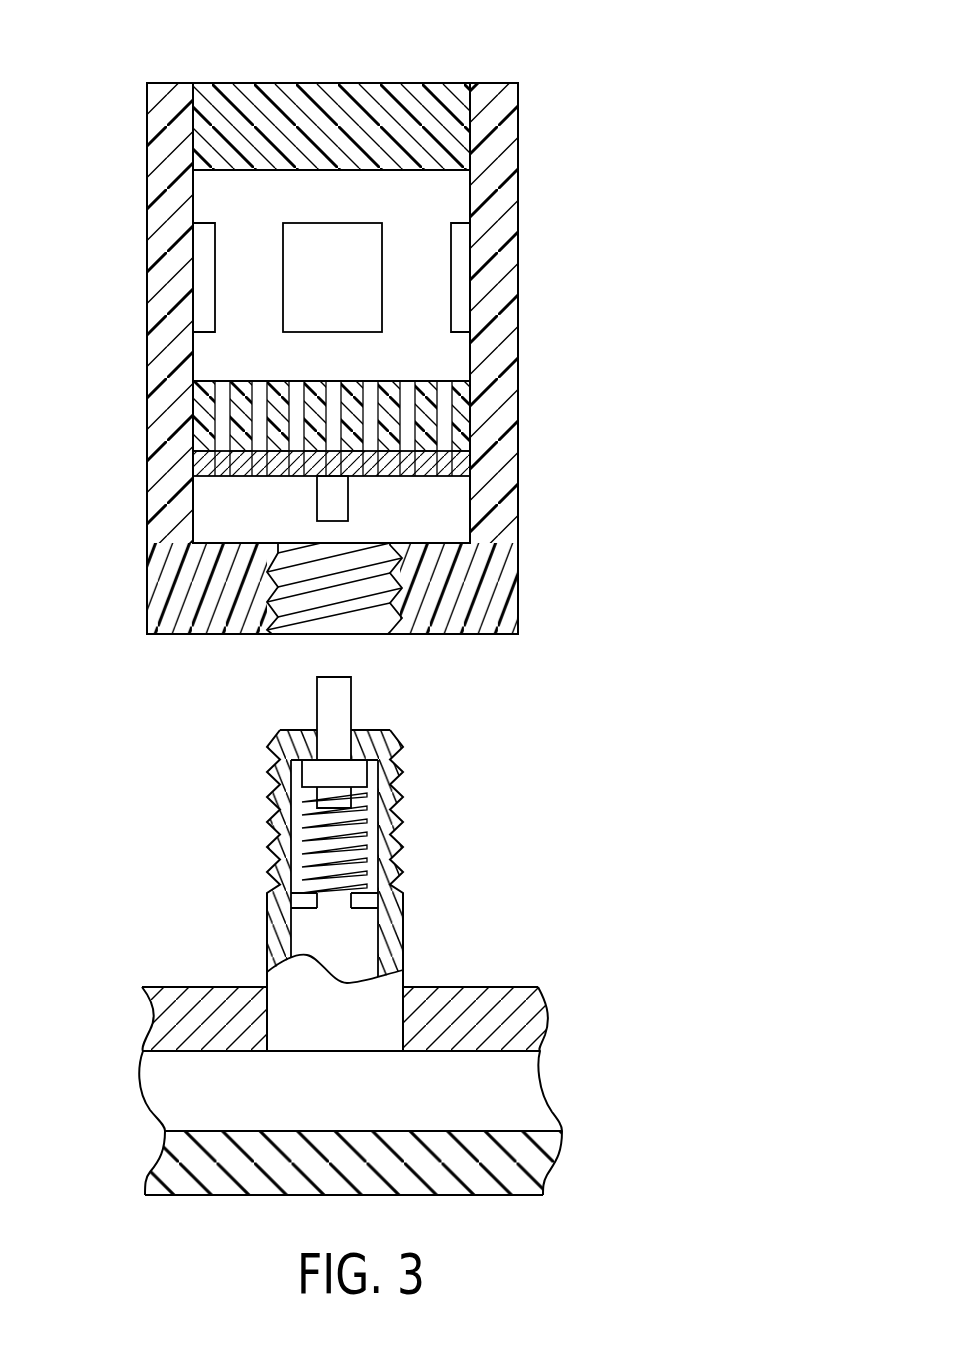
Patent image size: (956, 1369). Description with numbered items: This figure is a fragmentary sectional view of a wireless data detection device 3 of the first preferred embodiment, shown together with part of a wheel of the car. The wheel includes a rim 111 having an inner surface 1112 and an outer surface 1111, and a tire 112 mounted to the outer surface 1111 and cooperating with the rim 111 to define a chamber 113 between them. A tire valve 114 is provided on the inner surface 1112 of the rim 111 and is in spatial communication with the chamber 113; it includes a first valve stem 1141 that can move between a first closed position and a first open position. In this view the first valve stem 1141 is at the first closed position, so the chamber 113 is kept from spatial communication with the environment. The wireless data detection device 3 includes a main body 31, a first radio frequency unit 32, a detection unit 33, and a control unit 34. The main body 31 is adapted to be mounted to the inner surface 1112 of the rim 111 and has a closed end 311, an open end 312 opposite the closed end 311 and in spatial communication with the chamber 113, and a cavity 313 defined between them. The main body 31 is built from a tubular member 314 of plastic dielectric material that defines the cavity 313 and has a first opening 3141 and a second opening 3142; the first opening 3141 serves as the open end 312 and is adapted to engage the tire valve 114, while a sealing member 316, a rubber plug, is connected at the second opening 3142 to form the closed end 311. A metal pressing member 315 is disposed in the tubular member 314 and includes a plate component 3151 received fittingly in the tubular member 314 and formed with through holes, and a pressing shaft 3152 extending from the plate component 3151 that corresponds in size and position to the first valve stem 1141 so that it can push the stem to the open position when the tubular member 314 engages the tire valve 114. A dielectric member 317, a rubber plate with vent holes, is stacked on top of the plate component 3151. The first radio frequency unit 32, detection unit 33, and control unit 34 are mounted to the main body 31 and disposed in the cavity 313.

The wireless data detection device 3 is at (550, 106).
The main body 31 is at (518, 185).
The closed end 311 is at (167, 83).
The open end 312 is at (208, 634).
The cavity 313 is at (213, 350).
The tubular member 314 is at (148, 225).
The pressing member 315 is at (409, 390).
The sealing member 316 is at (240, 107).
The dielectric member 317 is at (245, 379).
The first radio frequency unit 32 is at (330, 222).
The detection unit 33 is at (202, 267).
The control unit 34 is at (465, 277).
The first opening 3141 is at (372, 588).
The second opening 3142 is at (472, 83).
The plate component 3151 is at (458, 467).
The pressing shaft 3152 is at (338, 500).
The tire valve 114 is at (404, 908).
The first valve stem 1141 is at (345, 775).
The rim 111 is at (538, 1014).
The outer surface 1111 is at (504, 1052).
The inner surface 1112 is at (488, 987).
The tire 112 is at (543, 1159).
The chamber 113 is at (495, 1098).